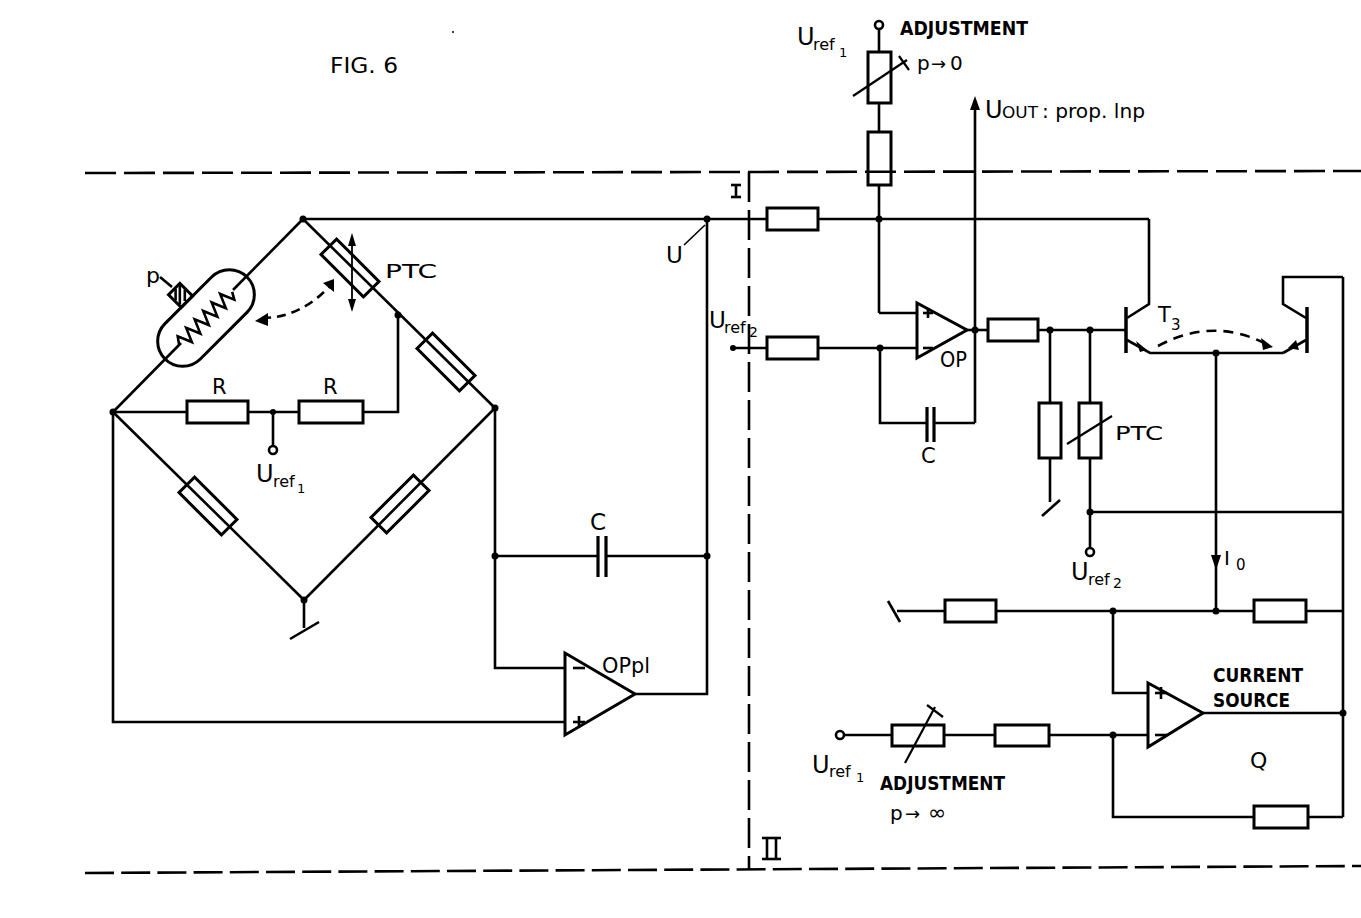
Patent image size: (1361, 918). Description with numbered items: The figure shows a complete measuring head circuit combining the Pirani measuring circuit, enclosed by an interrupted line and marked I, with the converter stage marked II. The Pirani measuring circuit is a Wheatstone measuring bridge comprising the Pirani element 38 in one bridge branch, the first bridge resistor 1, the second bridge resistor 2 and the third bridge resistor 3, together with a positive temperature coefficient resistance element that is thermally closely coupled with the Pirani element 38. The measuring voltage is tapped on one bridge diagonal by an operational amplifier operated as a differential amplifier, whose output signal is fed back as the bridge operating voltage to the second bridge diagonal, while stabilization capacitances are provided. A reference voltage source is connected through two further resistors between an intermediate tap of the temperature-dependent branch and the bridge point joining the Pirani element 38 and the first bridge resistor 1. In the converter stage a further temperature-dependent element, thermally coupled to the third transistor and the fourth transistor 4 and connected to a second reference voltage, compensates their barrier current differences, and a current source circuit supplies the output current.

The Pirani element 38 is at (209, 277).
The bridge resistor R1 1 is at (208, 510).
The bridge resistor R2 2 is at (453, 362).
The bridge resistor R3 3 is at (403, 508).
The transistor T4 4 is at (1299, 315).